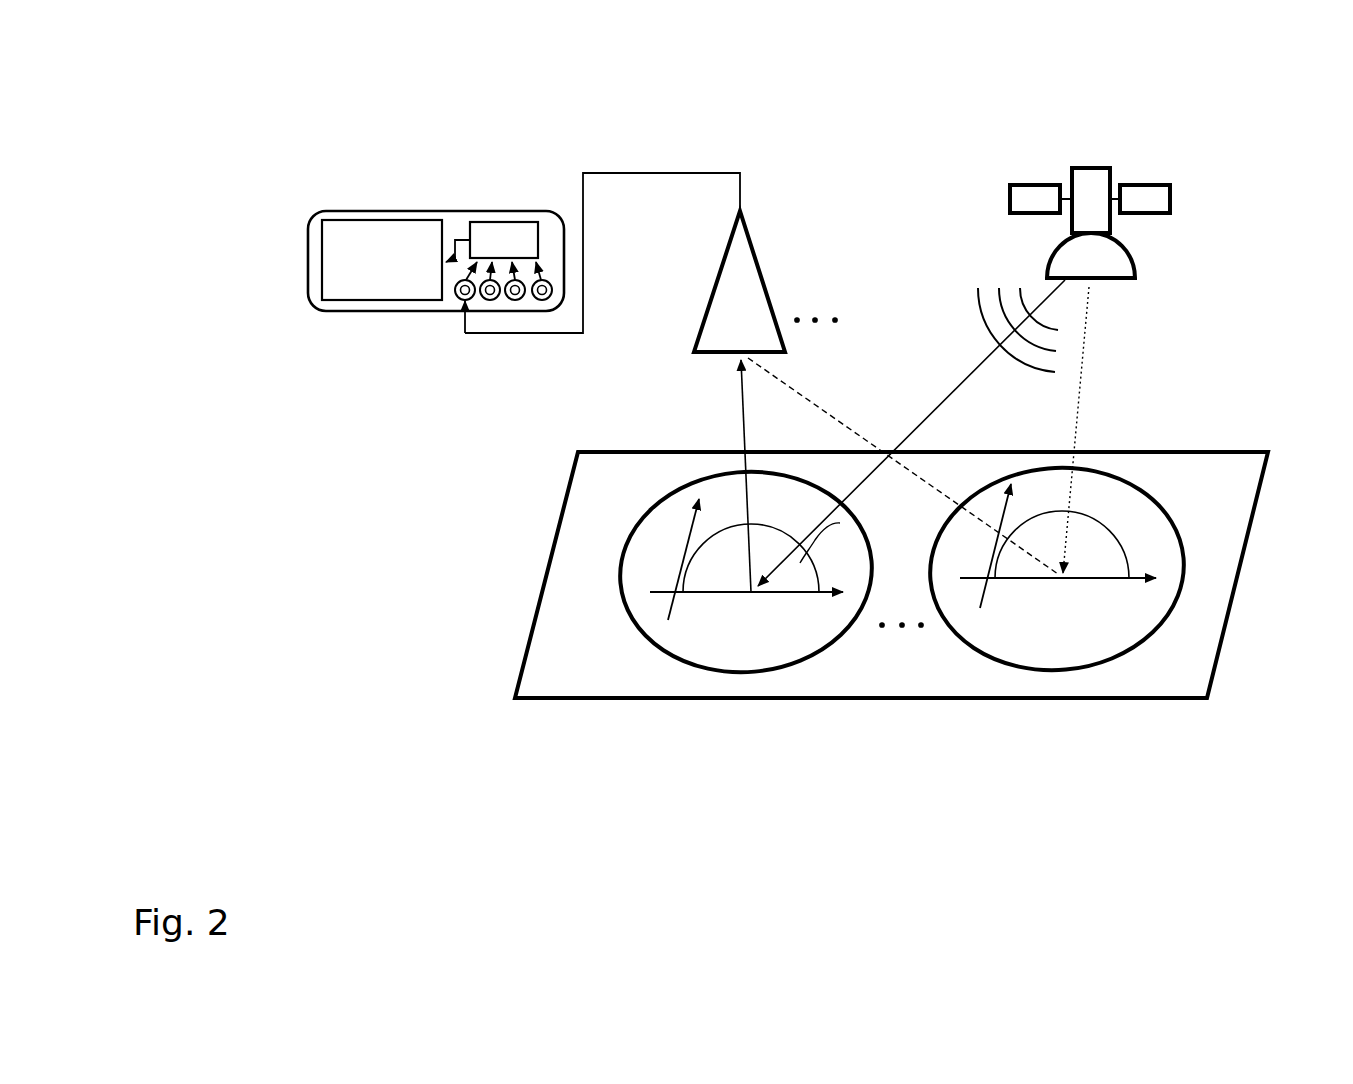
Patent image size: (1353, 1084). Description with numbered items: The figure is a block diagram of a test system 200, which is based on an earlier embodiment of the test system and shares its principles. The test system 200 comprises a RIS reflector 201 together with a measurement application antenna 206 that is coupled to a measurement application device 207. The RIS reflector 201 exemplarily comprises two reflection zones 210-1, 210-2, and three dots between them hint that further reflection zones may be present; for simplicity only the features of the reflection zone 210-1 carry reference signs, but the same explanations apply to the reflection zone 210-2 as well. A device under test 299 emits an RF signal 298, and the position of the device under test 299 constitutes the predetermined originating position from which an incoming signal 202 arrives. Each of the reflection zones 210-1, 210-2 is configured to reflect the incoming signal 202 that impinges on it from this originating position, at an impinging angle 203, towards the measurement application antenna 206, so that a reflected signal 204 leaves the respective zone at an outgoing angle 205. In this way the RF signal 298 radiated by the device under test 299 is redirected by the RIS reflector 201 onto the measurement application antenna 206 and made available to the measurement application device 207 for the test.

The test system 200 is at (334, 797).
The RIS reflector 201 is at (548, 570).
The incoming signal 202 is at (899, 440).
The impinging angle 203 is at (863, 540).
The reflected signal 204 is at (737, 405).
The outgoing angle 205 is at (710, 548).
The measurement application antenna 206 is at (747, 232).
The measurement application device 207 is at (427, 211).
The reflection zone 210-1 is at (815, 648).
The reflection zone 210-2 is at (1123, 647).
The RF signal 298 is at (990, 290).
The device under test 299 is at (1077, 166).